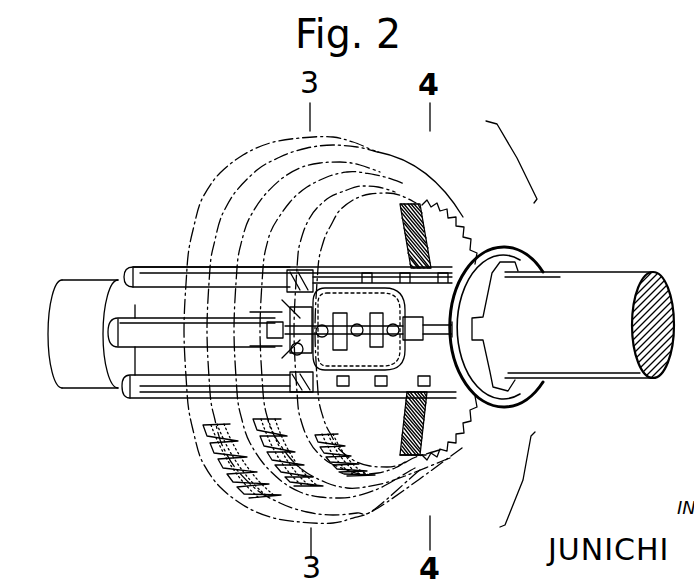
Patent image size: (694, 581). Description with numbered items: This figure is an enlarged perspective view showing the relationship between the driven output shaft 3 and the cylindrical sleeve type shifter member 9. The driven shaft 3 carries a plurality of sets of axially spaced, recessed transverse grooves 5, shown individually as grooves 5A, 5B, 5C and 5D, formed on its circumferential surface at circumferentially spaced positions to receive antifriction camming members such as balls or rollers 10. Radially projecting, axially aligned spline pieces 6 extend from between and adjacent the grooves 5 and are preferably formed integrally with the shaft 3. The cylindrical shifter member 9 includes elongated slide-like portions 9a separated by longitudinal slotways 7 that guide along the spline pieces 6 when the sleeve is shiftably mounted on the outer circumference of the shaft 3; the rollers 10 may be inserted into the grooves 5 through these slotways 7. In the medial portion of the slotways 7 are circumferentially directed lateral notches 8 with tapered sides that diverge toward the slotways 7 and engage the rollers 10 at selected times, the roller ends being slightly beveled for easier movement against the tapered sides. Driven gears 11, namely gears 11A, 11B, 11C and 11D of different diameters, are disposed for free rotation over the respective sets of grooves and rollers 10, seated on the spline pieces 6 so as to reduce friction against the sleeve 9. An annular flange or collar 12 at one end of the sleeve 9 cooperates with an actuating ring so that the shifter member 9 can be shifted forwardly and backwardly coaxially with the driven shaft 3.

The driven shaft 3 is at (610, 280).
The recessed transverse grooves 5 is at (518, 479).
The recessed transverse groove 5A is at (330, 350).
The recessed transverse groove 5B is at (357, 350).
The recessed transverse groove 5C is at (357, 393).
The recessed transverse groove 5D is at (466, 413).
The spline pieces 6 is at (417, 335).
The longitudinal slotways 7 is at (144, 283).
The lateral notches 8 is at (280, 352).
The shifter member 9 is at (128, 298).
The slide-like portions 9a is at (152, 353).
The rollers 10 is at (370, 350).
The driven gears 11 is at (513, 162).
The driven gear 11A is at (385, 151).
The driven gear 11B is at (405, 182).
The driven gear 11C is at (416, 203).
The driven gear 11D is at (441, 232).
The annular flange 12 is at (540, 257).